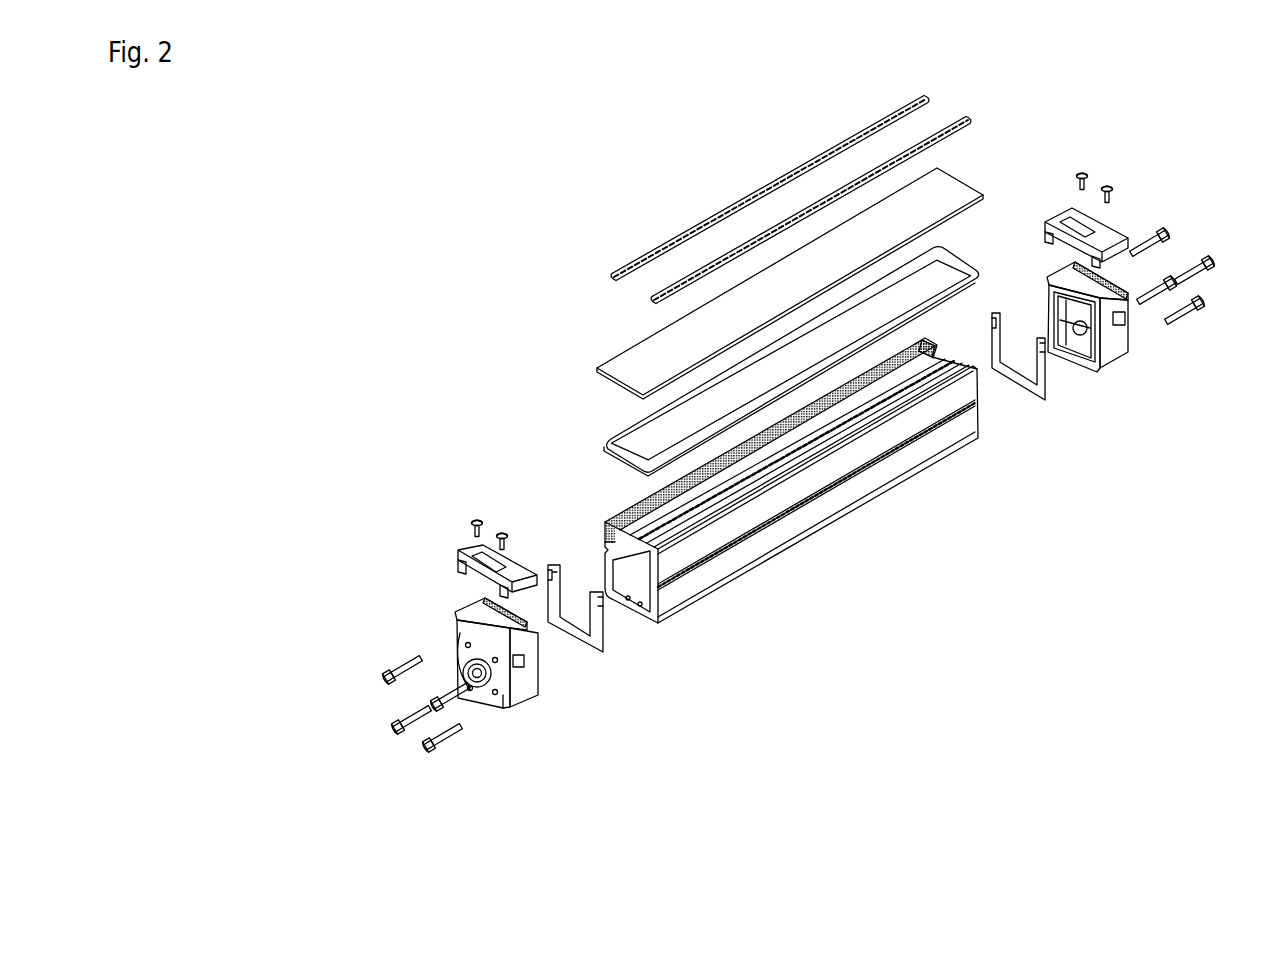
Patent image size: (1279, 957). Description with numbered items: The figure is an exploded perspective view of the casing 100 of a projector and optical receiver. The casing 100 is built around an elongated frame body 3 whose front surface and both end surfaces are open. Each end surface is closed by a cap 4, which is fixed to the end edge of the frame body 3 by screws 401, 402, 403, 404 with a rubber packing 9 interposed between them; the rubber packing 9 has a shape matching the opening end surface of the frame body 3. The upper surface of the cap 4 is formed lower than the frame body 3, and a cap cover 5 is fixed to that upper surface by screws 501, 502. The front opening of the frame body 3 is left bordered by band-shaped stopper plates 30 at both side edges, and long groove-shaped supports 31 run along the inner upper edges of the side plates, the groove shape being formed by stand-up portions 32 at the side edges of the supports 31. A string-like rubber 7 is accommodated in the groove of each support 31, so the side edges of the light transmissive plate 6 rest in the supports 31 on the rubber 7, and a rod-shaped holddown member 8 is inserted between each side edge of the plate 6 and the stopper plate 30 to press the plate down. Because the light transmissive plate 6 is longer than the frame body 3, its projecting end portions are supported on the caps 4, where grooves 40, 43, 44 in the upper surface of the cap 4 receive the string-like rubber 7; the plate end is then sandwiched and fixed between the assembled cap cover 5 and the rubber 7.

The casing 100 is at (1043, 110).
The frame body 3 is at (775, 469).
The stopper plate 30 is at (640, 507).
The support 31 is at (607, 533).
The stand-up portion 32 is at (928, 353).
The cap 4 is at (776, 485).
The groove 40 is at (517, 620).
The groove 43 is at (467, 600).
The groove 44 is at (1062, 270).
The screw 401 is at (403, 663).
The screw 402 is at (457, 697).
The screw 403 is at (395, 727).
The screw 404 is at (445, 737).
The cap cover 5 is at (472, 550).
The screw 501 is at (477, 518).
The screw 502 is at (502, 531).
The light transmissive plate 6 is at (958, 183).
The string-like rubber 7 is at (957, 268).
The holddown member 8 is at (840, 142).
The rubber packing 9 is at (607, 637).